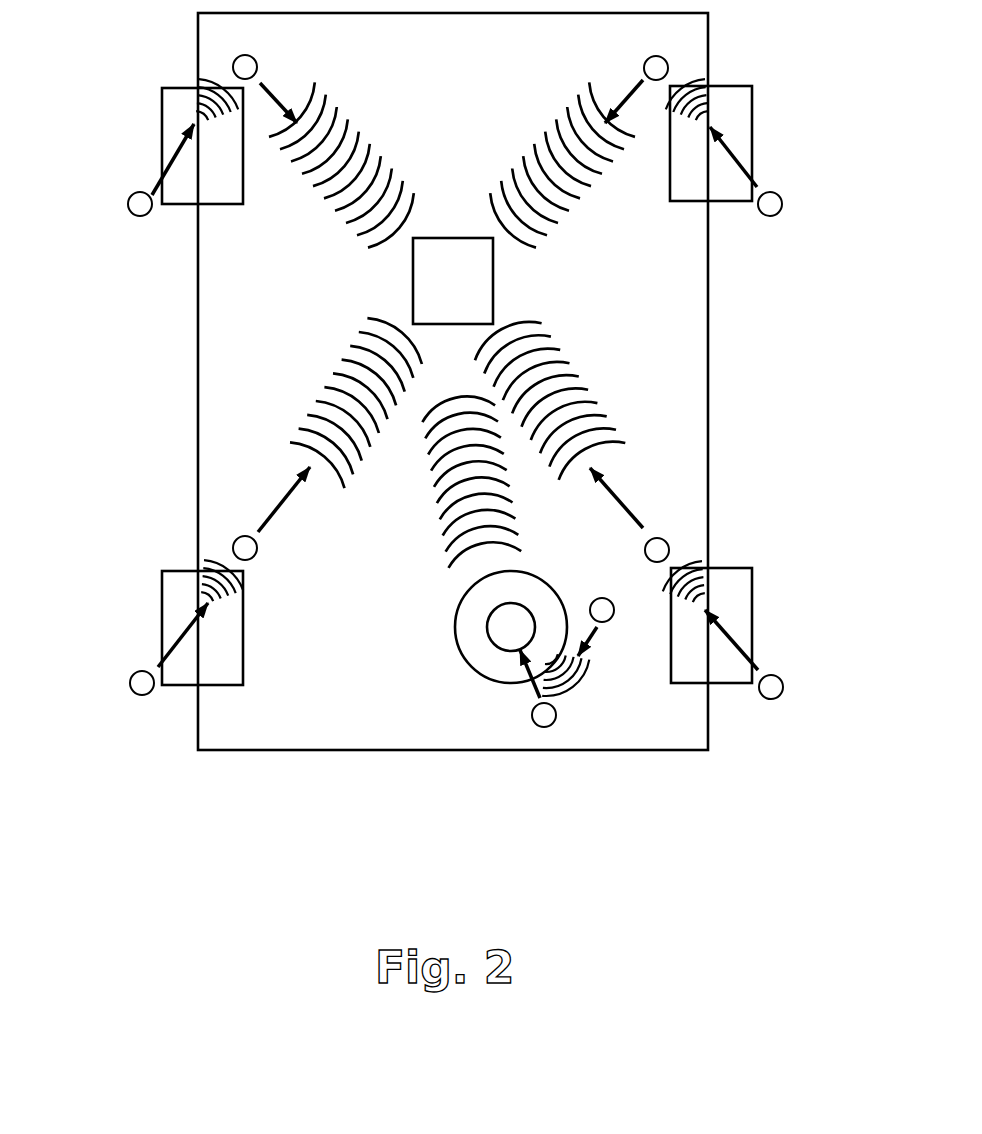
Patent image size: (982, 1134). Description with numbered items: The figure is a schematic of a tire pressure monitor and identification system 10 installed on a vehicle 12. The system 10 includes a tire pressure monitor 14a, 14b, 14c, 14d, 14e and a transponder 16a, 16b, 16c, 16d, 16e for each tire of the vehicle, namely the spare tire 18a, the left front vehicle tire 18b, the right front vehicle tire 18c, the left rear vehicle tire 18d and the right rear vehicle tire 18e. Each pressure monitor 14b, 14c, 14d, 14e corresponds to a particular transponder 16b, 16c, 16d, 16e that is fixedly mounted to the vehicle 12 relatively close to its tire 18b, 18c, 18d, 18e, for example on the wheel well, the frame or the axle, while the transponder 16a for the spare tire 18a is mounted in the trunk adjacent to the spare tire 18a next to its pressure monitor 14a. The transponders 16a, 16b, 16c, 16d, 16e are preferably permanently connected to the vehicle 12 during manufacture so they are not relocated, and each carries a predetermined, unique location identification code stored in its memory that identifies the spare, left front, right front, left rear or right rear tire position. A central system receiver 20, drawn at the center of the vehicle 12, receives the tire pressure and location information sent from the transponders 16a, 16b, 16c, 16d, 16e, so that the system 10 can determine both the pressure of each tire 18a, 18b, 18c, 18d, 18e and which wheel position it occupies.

The tire pressure monitor and identification system 10 is at (847, 377).
The vehicle 12 is at (643, 725).
The tire pressure monitor 14a is at (603, 622).
The tire pressure monitor 14b is at (130, 208).
The tire pressure monitor 14c is at (782, 204).
The tire pressure monitor 14d is at (138, 690).
The tire pressure monitor 14e is at (778, 690).
The transponder 16a is at (544, 727).
The transponder 16b is at (233, 62).
The transponder 16c is at (668, 66).
The transponder 16d is at (233, 546).
The transponder 16e is at (670, 548).
The spare tire 18a is at (488, 660).
The left front vehicle tire 18b is at (162, 131).
The right front vehicle tire 18c is at (735, 127).
The left rear vehicle tire 18d is at (178, 612).
The right rear vehicle tire 18e is at (740, 617).
The central system receiver 20 is at (460, 292).